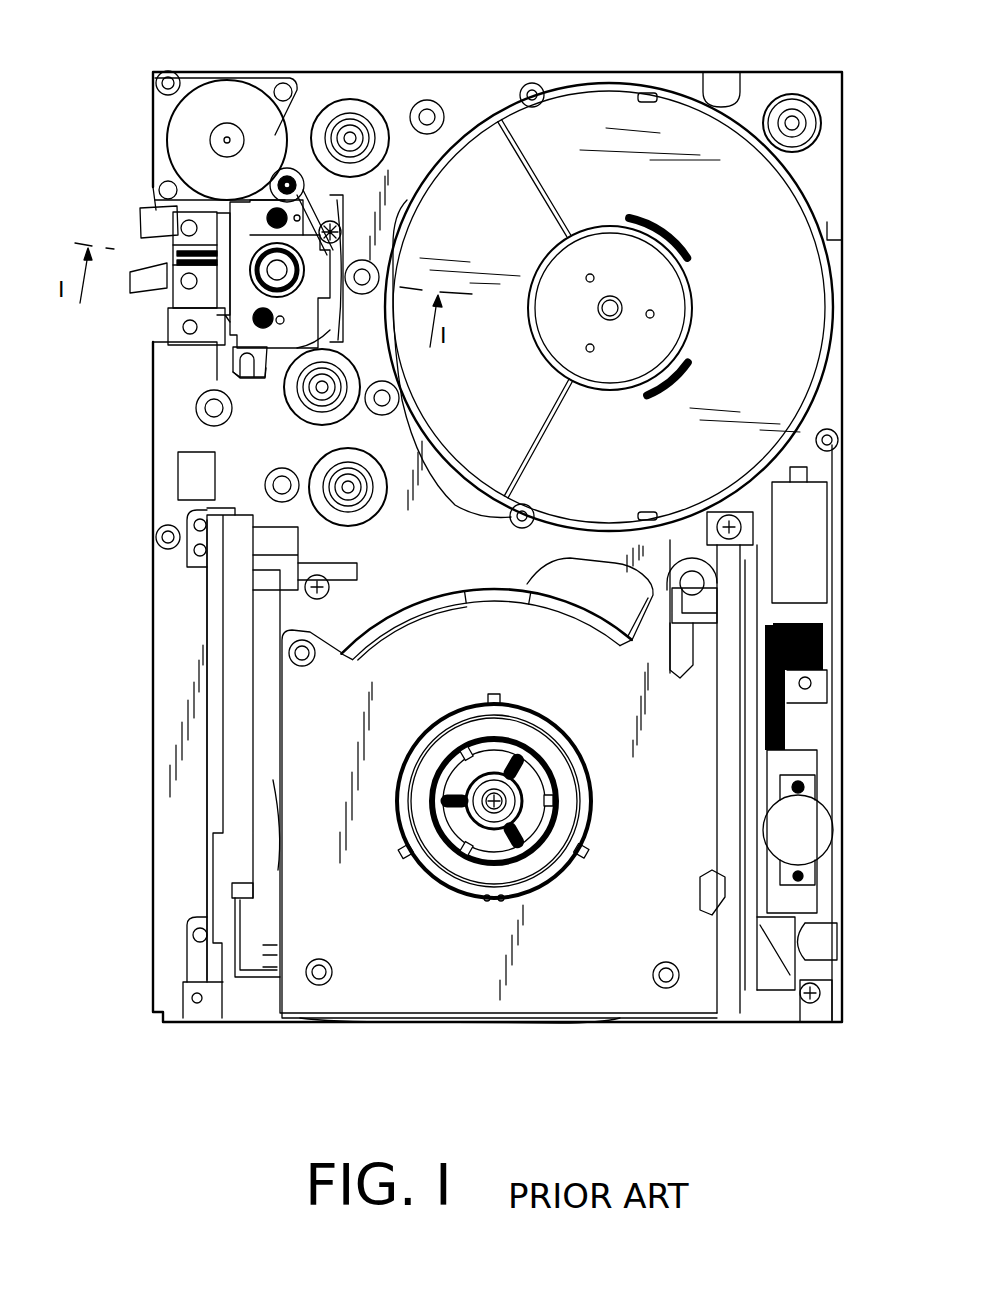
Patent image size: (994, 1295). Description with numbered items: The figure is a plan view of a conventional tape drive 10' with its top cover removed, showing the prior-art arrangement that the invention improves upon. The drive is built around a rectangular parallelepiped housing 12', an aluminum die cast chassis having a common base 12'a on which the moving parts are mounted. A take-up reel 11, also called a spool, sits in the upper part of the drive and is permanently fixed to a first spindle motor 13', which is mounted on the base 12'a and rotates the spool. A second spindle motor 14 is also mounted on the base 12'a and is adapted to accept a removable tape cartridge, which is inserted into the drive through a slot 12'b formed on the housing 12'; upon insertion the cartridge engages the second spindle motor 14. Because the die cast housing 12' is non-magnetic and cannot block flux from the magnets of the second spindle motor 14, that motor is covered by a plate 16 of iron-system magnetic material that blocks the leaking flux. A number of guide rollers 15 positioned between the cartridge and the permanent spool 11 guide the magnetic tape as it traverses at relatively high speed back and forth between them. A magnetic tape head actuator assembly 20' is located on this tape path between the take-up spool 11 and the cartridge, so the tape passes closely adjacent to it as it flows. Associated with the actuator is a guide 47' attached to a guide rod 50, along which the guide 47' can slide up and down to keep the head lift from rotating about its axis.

The tape drive 10' is at (481, 601).
The take-up reel 11 is at (788, 217).
The first spindle motor 13' is at (638, 306).
The second spindle motor 14 is at (533, 817).
The guide rollers 15 is at (356, 107).
The plate 16 is at (398, 998).
The magnetic tape head actuator assembly 20' is at (216, 275).
The guide 47' is at (255, 391).
The guide rod 50 is at (240, 379).
The housing 12' is at (396, 763).
The base 12'a is at (141, 750).
The slot 12'b is at (752, 768).